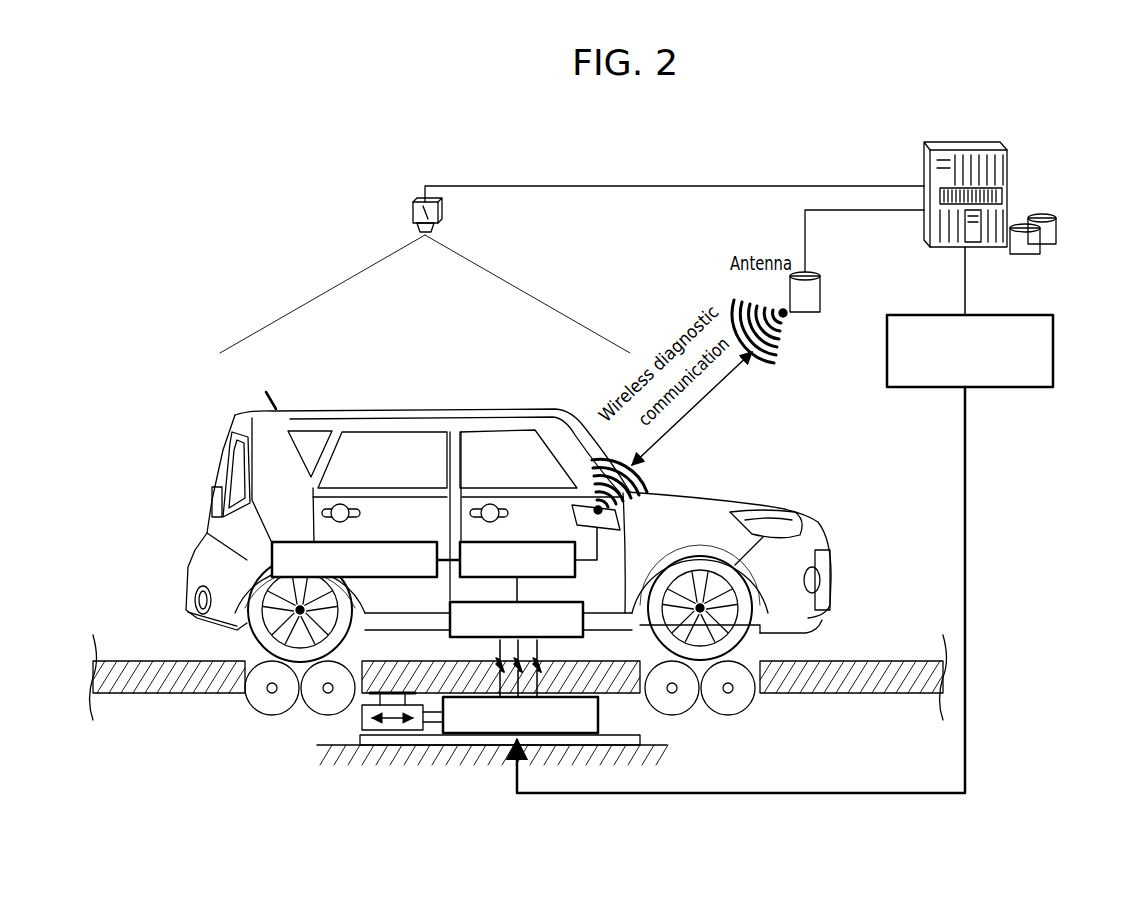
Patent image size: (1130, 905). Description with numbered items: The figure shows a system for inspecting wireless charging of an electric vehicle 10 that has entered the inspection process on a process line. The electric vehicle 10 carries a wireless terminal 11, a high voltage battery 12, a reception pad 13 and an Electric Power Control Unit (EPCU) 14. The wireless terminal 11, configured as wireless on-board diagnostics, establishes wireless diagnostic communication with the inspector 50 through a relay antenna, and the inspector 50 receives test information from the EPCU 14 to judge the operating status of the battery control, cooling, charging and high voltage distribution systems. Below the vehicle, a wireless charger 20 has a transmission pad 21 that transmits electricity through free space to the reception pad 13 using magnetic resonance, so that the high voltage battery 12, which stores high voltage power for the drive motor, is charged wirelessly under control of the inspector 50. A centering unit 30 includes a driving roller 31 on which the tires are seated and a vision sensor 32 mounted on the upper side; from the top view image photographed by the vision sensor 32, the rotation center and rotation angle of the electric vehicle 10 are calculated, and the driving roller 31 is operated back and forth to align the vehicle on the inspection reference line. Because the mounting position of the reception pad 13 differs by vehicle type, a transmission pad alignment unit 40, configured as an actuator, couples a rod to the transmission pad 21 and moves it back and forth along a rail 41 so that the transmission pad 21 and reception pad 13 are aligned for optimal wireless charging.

The electric vehicle 10 is at (216, 438).
The wireless terminal 11 is at (598, 463).
The high voltage battery 12 is at (392, 542).
The reception pad 13 is at (584, 604).
The Electric Power Control Unit (EPCU) 14 is at (530, 542).
The wireless charger 20 is at (1055, 352).
The transmission pad 21 is at (600, 716).
The centering unit 30 is at (518, 490).
The driving roller 31 is at (262, 714).
The vision sensor 32 is at (413, 211).
The transmission pad alignment unit 40 is at (395, 730).
The rail 41 is at (470, 746).
The inspector 50 is at (962, 142).